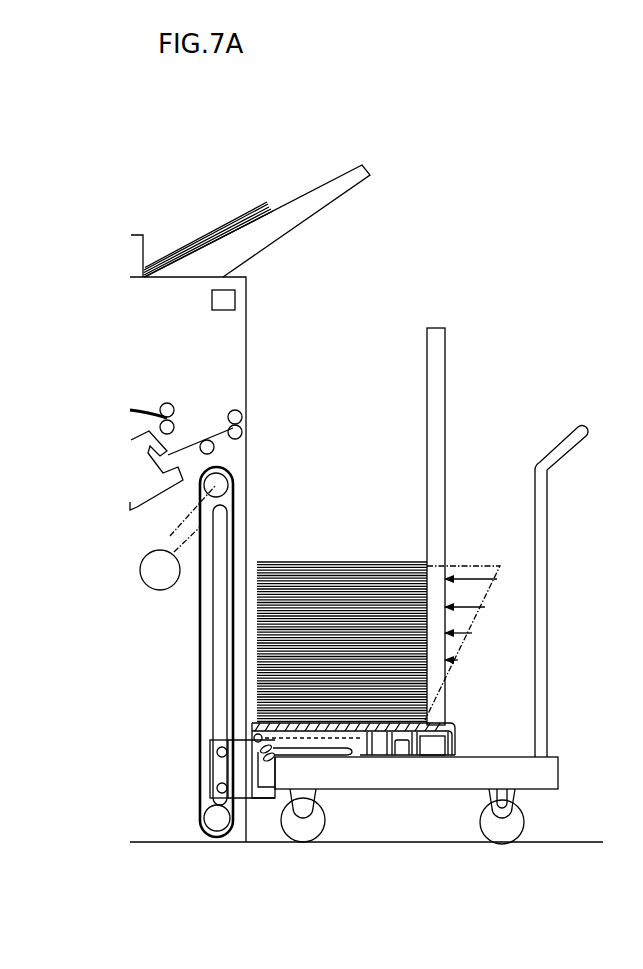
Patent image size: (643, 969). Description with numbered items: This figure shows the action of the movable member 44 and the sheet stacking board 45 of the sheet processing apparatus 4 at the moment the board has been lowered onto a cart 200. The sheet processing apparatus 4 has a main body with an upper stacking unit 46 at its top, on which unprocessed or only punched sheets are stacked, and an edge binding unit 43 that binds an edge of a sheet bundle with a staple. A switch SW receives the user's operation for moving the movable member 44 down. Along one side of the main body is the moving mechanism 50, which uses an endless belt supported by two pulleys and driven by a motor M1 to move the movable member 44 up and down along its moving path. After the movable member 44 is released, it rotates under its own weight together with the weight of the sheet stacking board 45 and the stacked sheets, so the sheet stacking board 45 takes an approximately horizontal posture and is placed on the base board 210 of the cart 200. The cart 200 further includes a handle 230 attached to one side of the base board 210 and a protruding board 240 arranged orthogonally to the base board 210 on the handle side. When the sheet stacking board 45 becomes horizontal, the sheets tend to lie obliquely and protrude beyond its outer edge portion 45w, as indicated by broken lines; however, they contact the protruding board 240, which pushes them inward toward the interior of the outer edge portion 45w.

The sheet processing apparatus 4 is at (134, 188).
The upper stacking unit 46 is at (305, 200).
The switch SW is at (246, 293).
The edge binding unit 43 is at (157, 372).
The moving mechanism 50 is at (165, 684).
The motor M1 is at (178, 537).
The protruding board 240 is at (436, 327).
The cart 200 is at (523, 321).
The handle 230 is at (573, 450).
The outer edge portion 45w is at (450, 727).
The sheet stacking board 45 is at (455, 762).
The movable member 44 is at (352, 755).
The base board 210 is at (545, 790).